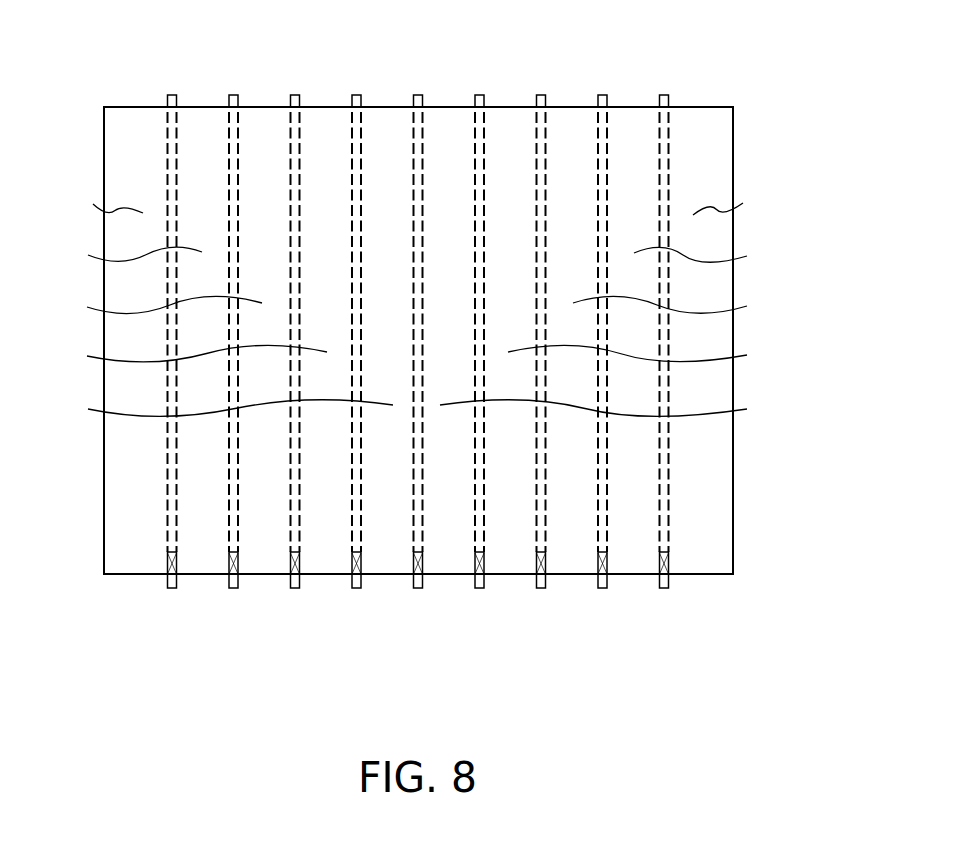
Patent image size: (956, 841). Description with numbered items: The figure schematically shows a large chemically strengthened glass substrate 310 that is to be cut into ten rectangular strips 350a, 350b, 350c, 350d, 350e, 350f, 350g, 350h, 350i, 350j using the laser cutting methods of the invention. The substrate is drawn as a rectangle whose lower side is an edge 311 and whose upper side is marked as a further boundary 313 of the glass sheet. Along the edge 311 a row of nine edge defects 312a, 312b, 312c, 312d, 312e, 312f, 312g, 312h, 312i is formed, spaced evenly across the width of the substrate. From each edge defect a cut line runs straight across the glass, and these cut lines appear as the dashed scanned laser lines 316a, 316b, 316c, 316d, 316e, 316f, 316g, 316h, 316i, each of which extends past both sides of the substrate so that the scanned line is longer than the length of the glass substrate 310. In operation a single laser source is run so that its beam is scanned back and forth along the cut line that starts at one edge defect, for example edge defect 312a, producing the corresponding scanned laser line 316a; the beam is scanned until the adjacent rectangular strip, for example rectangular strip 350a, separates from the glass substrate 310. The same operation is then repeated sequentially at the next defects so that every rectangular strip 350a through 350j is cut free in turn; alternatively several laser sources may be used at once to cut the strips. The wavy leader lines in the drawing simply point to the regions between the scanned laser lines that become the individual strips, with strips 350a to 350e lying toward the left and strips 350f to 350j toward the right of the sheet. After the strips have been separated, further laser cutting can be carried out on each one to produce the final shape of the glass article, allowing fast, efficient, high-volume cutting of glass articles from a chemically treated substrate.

The chemically strengthened glass substrate 310 is at (496, 319).
The edge 311 is at (700, 575).
The second edge 313 is at (702, 107).
The edge defect 312a is at (170, 568).
The edge defect 312b is at (233, 578).
The edge defect 312c is at (295, 577).
The edge defect 312d is at (357, 578).
The edge defect 312e is at (418, 577).
The edge defect 312f is at (480, 578).
The edge defect 312g is at (541, 577).
The edge defect 312h is at (603, 578).
The edge defect 312i is at (664, 577).
The scanned laser line 316a is at (167, 100).
The scanned laser line 316b is at (233, 95).
The scanned laser line 316c is at (295, 95).
The scanned laser line 316d is at (357, 95).
The scanned laser line 316e is at (418, 95).
The scanned laser line 316f is at (480, 95).
The scanned laser line 316g is at (541, 95).
The scanned laser line 316h is at (603, 95).
The scanned laser line 316i is at (664, 95).
The rectangular strip 350a is at (81, 199).
The rectangular strip 350b is at (109, 250).
The rectangular strip 350c is at (138, 302).
The rectangular strip 350d is at (171, 352).
The rectangular strip 350e is at (204, 407).
The rectangular strip 350f is at (623, 410).
The rectangular strip 350g is at (660, 355).
The rectangular strip 350h is at (693, 305).
The rectangular strip 350i is at (719, 254).
The rectangular strip 350j is at (746, 198).